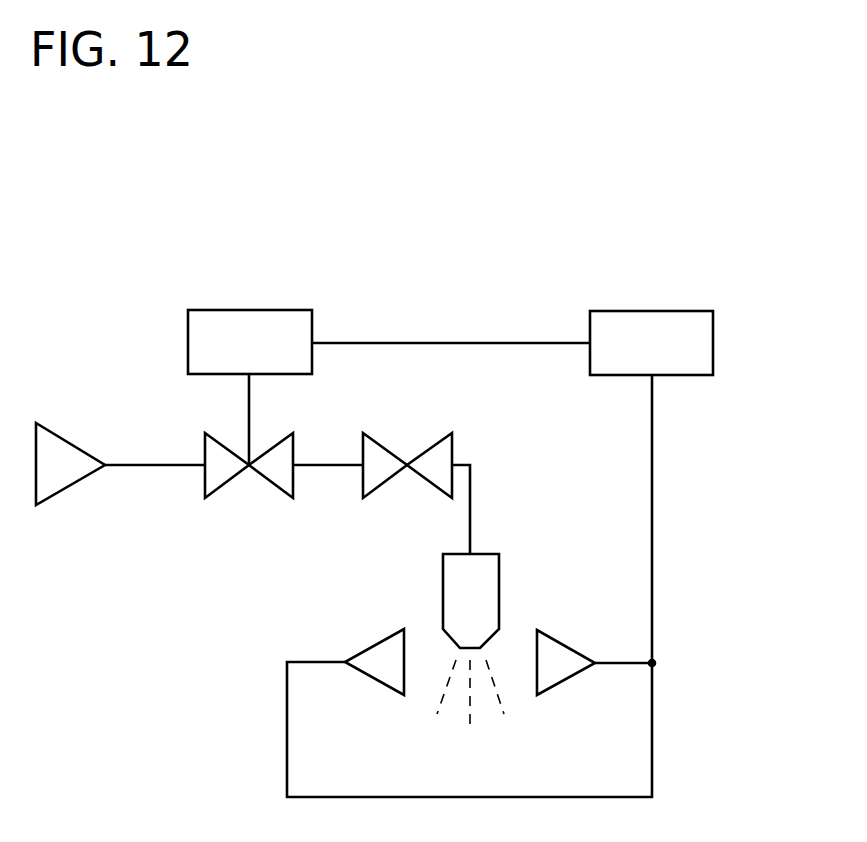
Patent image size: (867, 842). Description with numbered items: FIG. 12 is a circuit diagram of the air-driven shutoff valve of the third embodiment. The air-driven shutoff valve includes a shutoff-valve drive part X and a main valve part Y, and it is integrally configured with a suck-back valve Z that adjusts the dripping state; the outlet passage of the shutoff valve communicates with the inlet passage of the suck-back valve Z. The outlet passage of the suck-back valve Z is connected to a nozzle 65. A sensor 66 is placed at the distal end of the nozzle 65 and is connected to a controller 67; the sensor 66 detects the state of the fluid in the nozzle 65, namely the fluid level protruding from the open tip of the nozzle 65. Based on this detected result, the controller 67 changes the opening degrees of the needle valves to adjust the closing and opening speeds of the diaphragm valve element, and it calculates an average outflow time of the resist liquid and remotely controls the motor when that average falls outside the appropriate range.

The shutoff-valve drive part X is at (240, 310).
The controller 67 is at (655, 311).
The main valve part Y is at (292, 448).
The suck-back valve Z is at (447, 453).
The nozzle 65 is at (500, 566).
The sensor 66 is at (378, 647).